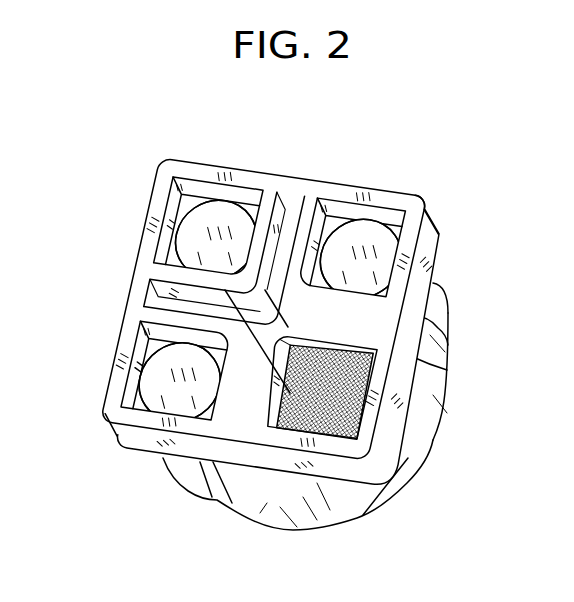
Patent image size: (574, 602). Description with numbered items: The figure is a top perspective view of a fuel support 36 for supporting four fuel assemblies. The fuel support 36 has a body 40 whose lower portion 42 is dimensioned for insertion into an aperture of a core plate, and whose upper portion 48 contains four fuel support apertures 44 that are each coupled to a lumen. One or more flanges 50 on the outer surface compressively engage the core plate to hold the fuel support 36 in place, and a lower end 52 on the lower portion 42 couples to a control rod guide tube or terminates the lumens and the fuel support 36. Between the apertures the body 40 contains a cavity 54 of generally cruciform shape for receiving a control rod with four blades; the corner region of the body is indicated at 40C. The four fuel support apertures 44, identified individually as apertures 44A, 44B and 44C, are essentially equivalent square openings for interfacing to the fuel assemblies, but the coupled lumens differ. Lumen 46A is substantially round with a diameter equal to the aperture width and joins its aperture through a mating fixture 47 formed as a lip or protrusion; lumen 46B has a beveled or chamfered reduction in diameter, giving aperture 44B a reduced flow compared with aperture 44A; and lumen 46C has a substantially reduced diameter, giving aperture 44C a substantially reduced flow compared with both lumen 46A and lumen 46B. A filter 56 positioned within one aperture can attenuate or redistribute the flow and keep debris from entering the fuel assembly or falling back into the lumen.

The fuel support 36 is at (378, 143).
The body 40 is at (433, 302).
The frame corner portion 40C is at (427, 197).
The lower portion 42 is at (413, 458).
The fuel support aperture 44 is at (140, 352).
The fuel support aperture 44A is at (242, 452).
The fuel support aperture 44B is at (162, 201).
The fuel support aperture 44C is at (369, 206).
The lumen 46A is at (187, 382).
The lumen 46B is at (228, 230).
The lumen 46C is at (373, 250).
The mating fixture 47 is at (124, 374).
The upper portion 48 is at (433, 335).
The flange 50 is at (447, 370).
The lower end 52 is at (268, 506).
The cavity 54 is at (167, 297).
The filter 56 is at (348, 490).